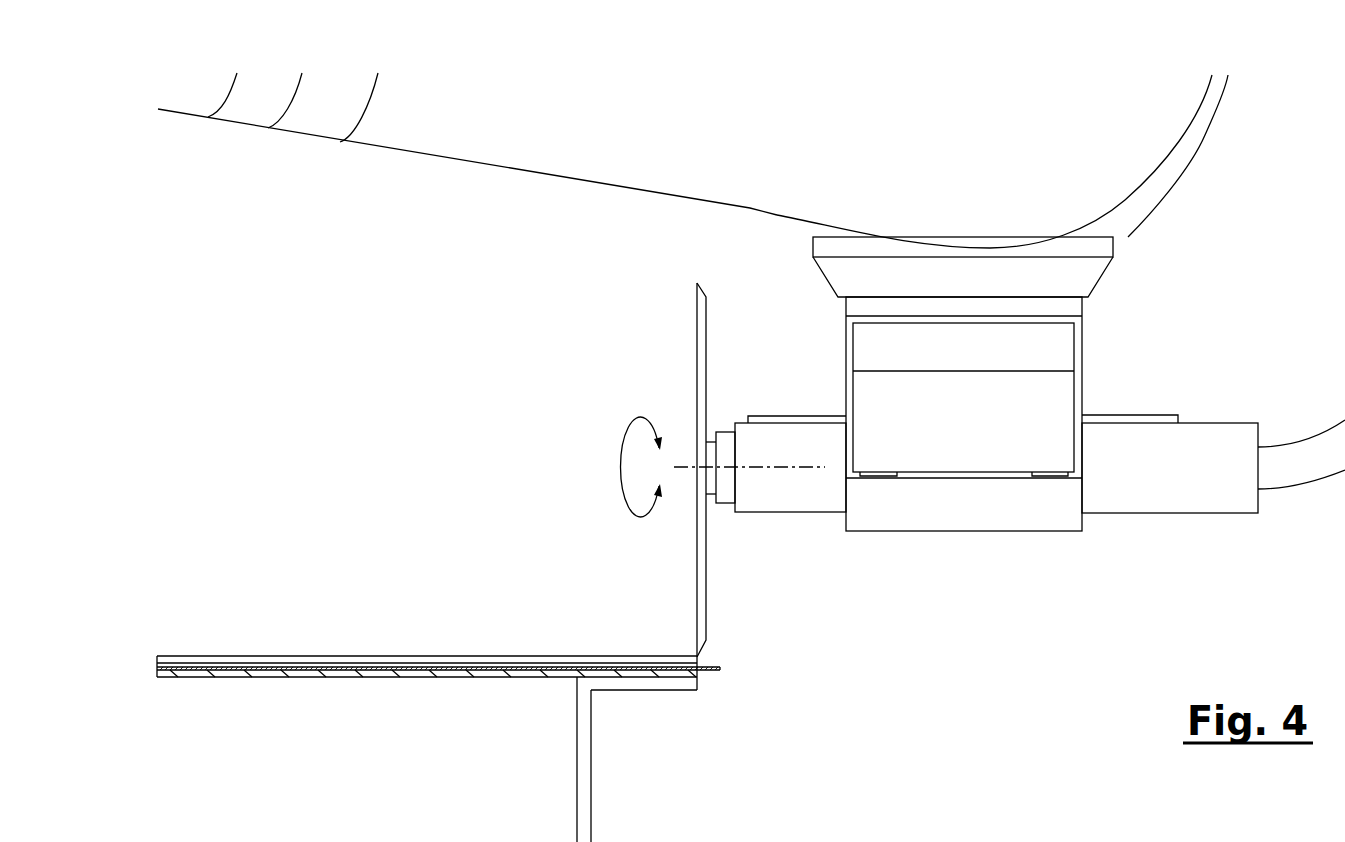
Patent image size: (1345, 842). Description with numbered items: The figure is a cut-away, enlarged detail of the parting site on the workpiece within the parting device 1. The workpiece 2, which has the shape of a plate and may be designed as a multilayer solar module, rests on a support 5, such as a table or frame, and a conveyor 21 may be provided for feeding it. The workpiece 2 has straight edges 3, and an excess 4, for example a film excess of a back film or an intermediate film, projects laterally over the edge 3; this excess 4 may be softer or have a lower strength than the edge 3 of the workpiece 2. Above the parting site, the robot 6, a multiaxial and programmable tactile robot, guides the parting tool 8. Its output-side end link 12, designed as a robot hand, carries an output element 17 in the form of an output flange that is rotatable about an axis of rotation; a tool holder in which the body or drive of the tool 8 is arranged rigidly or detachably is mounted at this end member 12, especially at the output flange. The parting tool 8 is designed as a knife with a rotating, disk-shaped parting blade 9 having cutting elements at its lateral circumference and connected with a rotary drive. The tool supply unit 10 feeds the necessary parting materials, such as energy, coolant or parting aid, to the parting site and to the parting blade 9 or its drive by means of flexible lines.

The parting device 1 is at (395, 506).
The workpiece 2 is at (388, 658).
The edge 3 is at (457, 736).
The excess 4 is at (720, 670).
The support 5 is at (427, 736).
The conveyor 21 is at (522, 678).
The robot 6 is at (1049, 161).
The end link 12 is at (1112, 148).
The parting tool 8 is at (898, 452).
The parting blade 9 is at (703, 617).
The tool supply unit 10 is at (1285, 463).
The output element 17 is at (1077, 272).